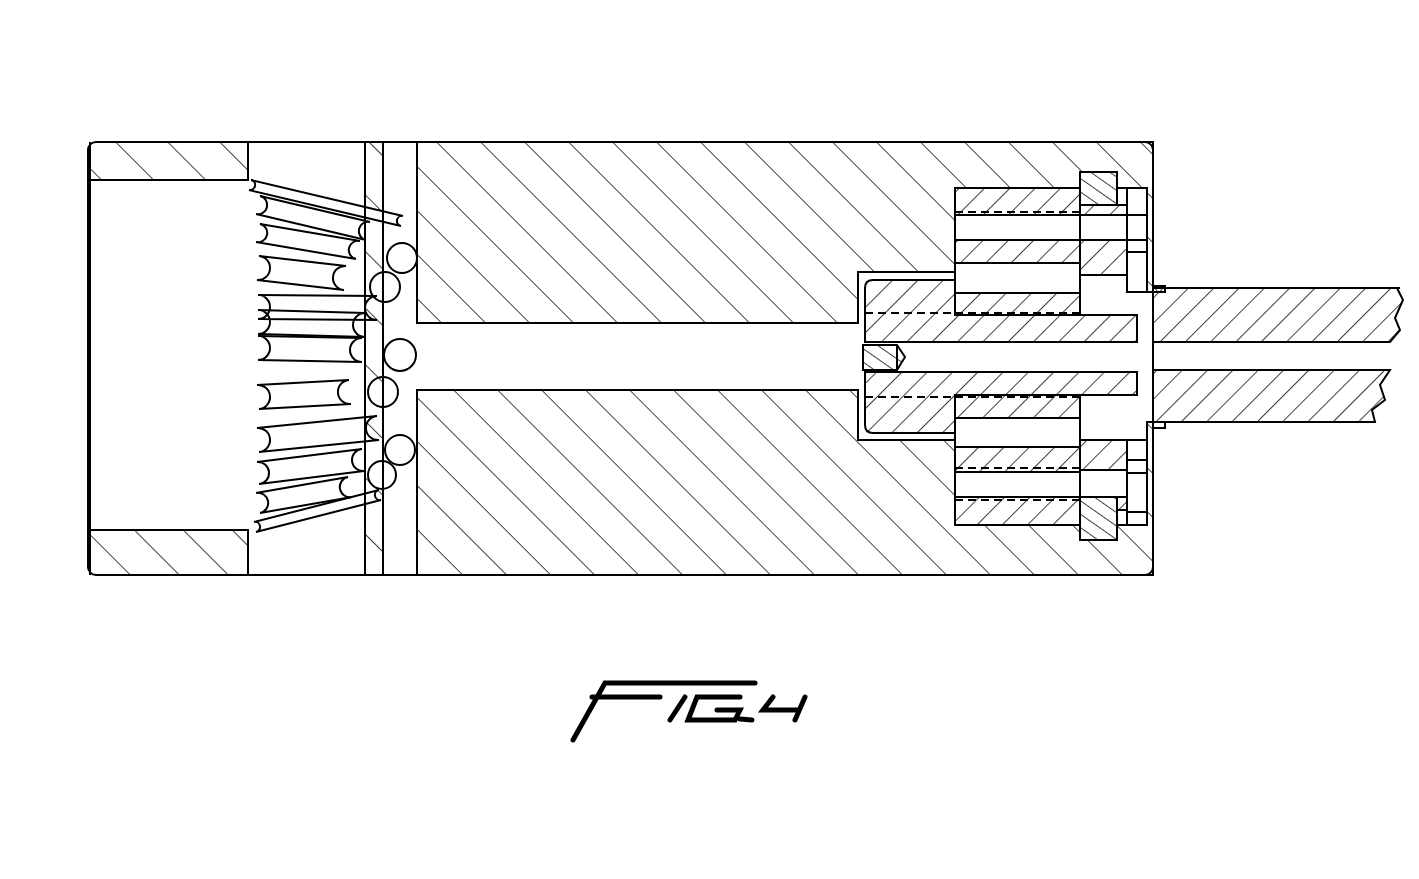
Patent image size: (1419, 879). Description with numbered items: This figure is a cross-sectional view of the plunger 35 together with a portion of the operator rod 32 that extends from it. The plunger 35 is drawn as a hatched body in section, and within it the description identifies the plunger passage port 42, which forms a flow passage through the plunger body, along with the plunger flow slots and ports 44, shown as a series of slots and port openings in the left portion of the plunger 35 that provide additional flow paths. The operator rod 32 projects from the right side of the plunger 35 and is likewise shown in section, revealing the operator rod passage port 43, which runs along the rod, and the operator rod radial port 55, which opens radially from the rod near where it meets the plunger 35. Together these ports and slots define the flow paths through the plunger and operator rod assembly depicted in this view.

The plunger 35 is at (97, 213).
The plunger passage port 42 is at (485, 355).
The plunger flow slots and ports 44 is at (397, 350).
The operator rod passage port 43 is at (1257, 352).
The operator rod 32 is at (1197, 288).
The operator rod radial port 55 is at (1147, 393).